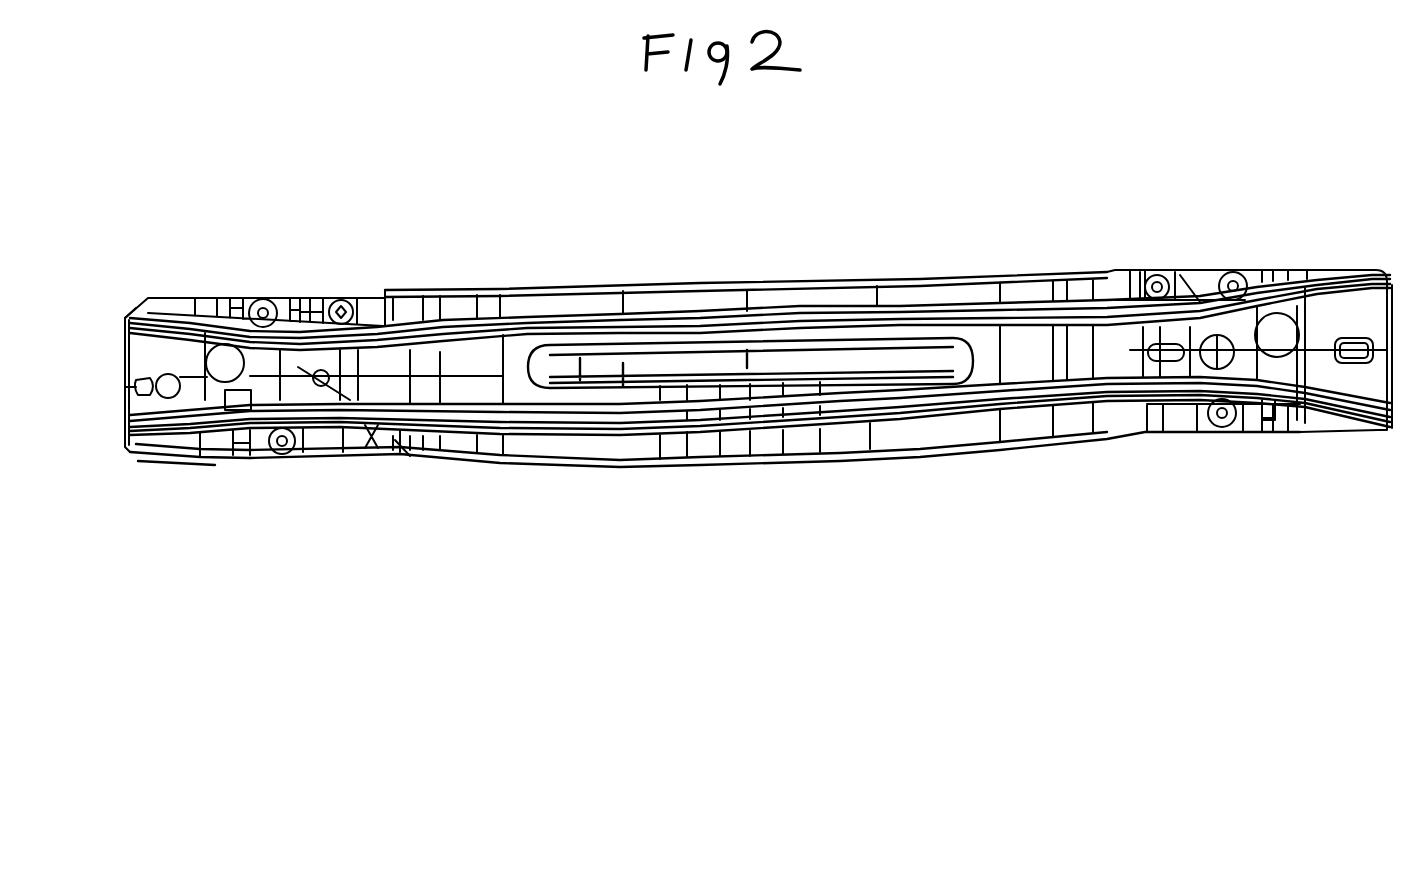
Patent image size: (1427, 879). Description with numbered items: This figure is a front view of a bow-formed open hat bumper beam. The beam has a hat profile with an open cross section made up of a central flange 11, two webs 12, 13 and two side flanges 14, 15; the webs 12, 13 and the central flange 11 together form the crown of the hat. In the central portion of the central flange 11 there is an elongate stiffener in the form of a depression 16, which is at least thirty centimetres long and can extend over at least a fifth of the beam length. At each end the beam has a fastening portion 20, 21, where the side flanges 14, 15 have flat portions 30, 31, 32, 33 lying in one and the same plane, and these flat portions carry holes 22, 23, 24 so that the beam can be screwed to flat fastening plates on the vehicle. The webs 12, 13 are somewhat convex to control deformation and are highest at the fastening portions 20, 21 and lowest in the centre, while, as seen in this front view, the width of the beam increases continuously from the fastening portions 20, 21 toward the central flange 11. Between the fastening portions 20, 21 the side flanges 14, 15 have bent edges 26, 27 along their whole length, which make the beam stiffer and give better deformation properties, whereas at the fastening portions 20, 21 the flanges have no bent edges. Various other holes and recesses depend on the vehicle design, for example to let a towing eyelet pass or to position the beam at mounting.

The central flange 11 is at (989, 355).
The web 12 is at (777, 446).
The web 13 is at (797, 293).
The side flange 14 is at (263, 453).
The side flange 15 is at (283, 296).
The depression 16 is at (604, 390).
The fastening portion 20 is at (250, 460).
The fastening portion 21 is at (1263, 423).
The hole 22 is at (263, 297).
The hole 23 is at (340, 298).
The hole 24 is at (284, 455).
The bent edge 26 is at (668, 467).
The bent edge 27 is at (650, 288).
The flat portion 30 is at (322, 443).
The flat portion 31 is at (1187, 417).
The flat portion 32 is at (320, 300).
The flat portion 33 is at (1222, 215).